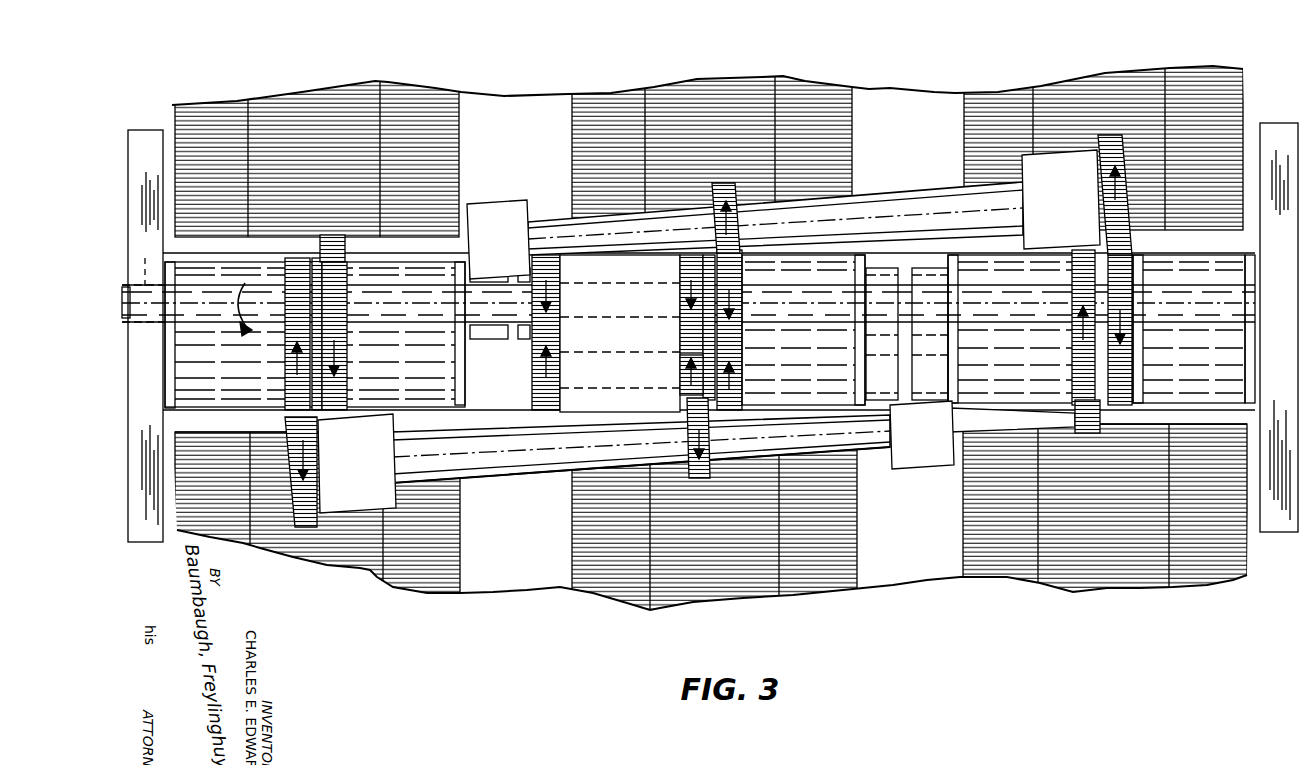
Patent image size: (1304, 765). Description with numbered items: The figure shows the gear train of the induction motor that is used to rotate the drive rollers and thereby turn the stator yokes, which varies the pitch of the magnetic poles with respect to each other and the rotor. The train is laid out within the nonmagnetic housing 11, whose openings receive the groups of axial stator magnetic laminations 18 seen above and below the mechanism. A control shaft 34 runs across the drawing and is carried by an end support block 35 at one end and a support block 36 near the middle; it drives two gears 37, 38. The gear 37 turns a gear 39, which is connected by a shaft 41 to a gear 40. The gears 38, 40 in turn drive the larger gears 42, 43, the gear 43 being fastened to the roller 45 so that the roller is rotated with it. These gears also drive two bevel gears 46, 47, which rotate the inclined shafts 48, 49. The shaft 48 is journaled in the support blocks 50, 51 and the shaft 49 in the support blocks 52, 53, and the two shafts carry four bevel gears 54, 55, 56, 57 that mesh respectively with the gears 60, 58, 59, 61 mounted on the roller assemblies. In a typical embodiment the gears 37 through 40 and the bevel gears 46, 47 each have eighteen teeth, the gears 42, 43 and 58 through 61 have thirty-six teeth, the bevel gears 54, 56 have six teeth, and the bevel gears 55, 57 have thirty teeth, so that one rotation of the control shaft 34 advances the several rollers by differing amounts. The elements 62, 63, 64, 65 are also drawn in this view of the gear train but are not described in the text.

The nonmagnetic housing 11 is at (914, 584).
The axial stator magnetic laminations 18 is at (374, 576).
The control shaft 34 is at (144, 279).
The end support block 35 is at (140, 130).
The support block 36 is at (562, 412).
The gear 37 is at (561, 302).
The gear 38 is at (680, 297).
The gear 39 is at (561, 376).
The gear 40 is at (748, 352).
The shaft 41 is at (628, 392).
The gear 42 is at (690, 350).
The gear 43 is at (742, 312).
The roller 45 is at (870, 270).
The bevel gear 46 is at (699, 480).
The bevel gear 47 is at (722, 183).
The shaft 48 is at (546, 480).
The shaft 49 is at (544, 222).
The support block 50 is at (500, 202).
The support block 51 is at (1022, 243).
The support block 52 is at (932, 470).
The support block 53 is at (445, 487).
The bevel gear 54 is at (1100, 418).
The bevel gear 55 is at (306, 530).
The bevel gear 56 is at (320, 249).
The bevel gear 57 is at (1132, 244).
The gear 58 is at (292, 388).
The gear 59 is at (338, 418).
The gear 60 is at (1072, 300).
The gear 61 is at (1135, 308).
The roller 62 is at (176, 380).
The coupling 63 is at (466, 268).
The roller 64 is at (950, 270).
The end plate 65 is at (1248, 276).